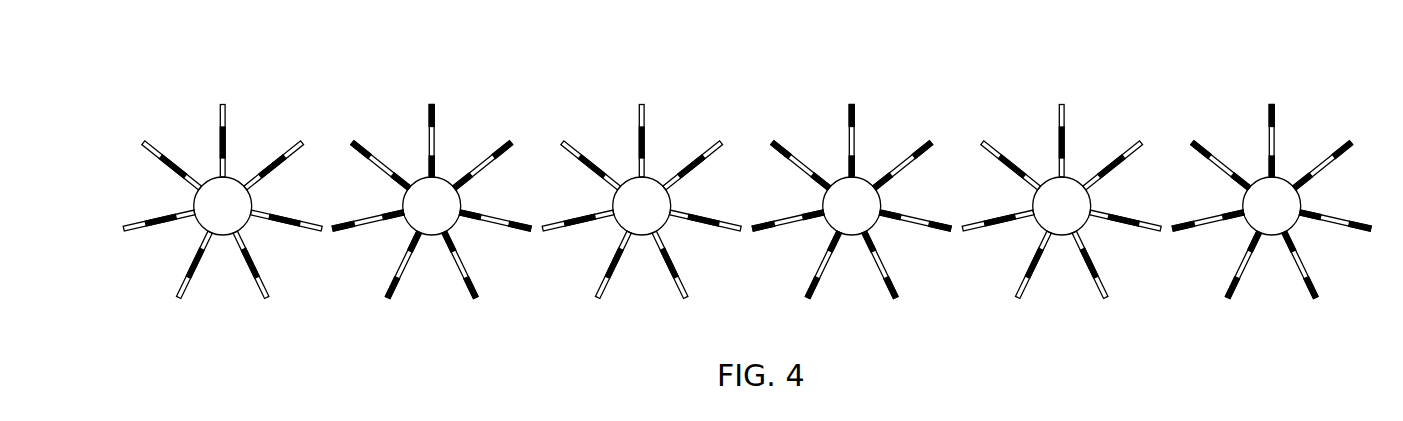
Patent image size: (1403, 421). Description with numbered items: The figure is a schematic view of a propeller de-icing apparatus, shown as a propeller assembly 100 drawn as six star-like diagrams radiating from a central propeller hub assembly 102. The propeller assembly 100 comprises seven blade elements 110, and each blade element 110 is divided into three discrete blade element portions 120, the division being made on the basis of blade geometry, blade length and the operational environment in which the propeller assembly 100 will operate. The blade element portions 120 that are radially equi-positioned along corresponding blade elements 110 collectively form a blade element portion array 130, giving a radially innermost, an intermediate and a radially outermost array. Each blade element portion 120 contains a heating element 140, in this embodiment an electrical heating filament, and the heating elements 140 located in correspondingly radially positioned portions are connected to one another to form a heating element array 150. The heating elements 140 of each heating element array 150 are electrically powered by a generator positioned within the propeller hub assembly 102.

The propeller assembly 100 is at (222, 214).
The propeller hub assembly 102 is at (223, 206).
The blade elements 110 is at (222, 105).
The blade element portions 120 is at (262, 218).
The blade element portion array 130 is at (427, 167).
The heating element 140 is at (609, 175).
The heating element array 150 is at (777, 142).